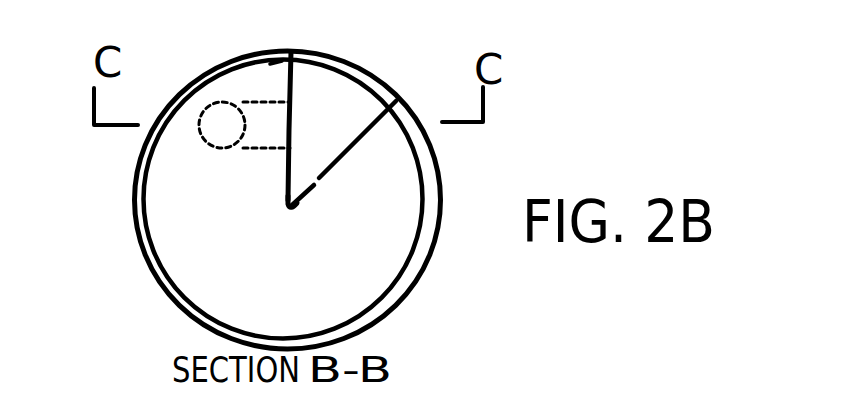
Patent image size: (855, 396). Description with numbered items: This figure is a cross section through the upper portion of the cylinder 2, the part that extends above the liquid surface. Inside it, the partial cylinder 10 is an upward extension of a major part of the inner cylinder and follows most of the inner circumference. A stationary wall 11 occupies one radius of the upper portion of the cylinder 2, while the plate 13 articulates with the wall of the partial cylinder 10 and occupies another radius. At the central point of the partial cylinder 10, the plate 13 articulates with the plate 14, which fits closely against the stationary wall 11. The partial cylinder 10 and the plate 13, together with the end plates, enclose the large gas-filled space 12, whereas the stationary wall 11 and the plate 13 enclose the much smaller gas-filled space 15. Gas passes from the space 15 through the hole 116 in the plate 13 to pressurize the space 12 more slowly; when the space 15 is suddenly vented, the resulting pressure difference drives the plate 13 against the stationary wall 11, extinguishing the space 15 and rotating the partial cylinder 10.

The cylinder 2 is at (135, 196).
The partial cylinder 10 is at (147, 230).
The stationary wall 11 is at (291, 76).
The space 12 is at (305, 293).
The plate 13 is at (362, 135).
The plate 14 is at (283, 182).
The space 15 is at (340, 137).
The hole 116 is at (316, 187).